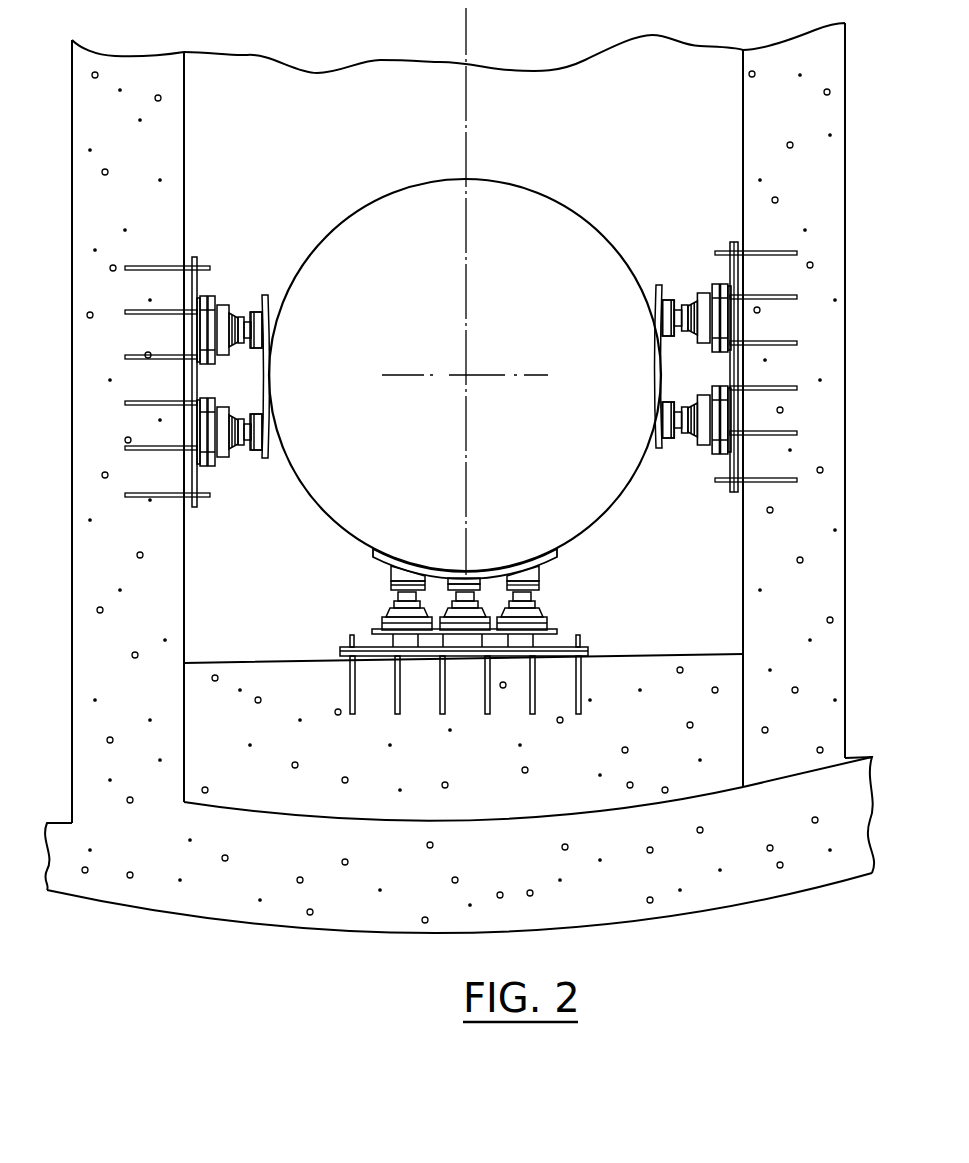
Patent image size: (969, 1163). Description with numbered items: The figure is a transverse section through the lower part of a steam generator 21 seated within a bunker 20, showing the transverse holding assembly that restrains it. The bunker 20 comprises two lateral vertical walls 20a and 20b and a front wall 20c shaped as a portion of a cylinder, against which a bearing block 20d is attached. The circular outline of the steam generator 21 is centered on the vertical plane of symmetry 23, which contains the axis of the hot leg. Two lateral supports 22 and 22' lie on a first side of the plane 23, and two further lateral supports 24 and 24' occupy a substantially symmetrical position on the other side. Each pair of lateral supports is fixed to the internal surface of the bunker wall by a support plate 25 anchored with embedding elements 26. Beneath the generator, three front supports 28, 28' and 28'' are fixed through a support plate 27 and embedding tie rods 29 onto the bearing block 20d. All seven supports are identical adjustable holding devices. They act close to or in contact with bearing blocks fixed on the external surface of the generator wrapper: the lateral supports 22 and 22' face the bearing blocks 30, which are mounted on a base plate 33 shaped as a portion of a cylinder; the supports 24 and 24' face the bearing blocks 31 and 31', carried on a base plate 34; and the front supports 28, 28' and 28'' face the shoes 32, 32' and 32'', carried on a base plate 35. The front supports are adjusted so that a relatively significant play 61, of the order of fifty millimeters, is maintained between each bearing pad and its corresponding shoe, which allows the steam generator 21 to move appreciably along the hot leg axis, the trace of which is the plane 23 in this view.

The bunker 20 is at (459, 494).
The lateral vertical wall 20a is at (136, 140).
The lateral vertical wall 20b is at (797, 114).
The front wall 20c is at (402, 880).
The bearing block 20d is at (262, 770).
The steam generator 21 is at (563, 193).
The lateral support 22 is at (232, 440).
The lateral support 22' is at (235, 307).
The vertical plane of symmetry 23 is at (472, 30).
The lateral support 24 is at (695, 435).
The lateral support 24' is at (694, 289).
The support plate 25 is at (200, 490).
The embedding elements 26 is at (152, 305).
The support plate 27 is at (386, 656).
The front support 28 is at (377, 608).
The front support 28' is at (465, 646).
The front support 28'' is at (565, 611).
The embedding tie rods 29 is at (350, 706).
The bearing block 30 is at (275, 322).
The bearing block 31 is at (629, 425).
The bearing block 31' is at (626, 307).
The bearing block 32 is at (392, 538).
The bearing block 32' is at (483, 540).
The bearing block 32'' is at (551, 538).
The base plate 33 is at (270, 375).
The base plate 34 is at (660, 372).
The base plate 35 is at (438, 562).
The play 61 is at (393, 585).